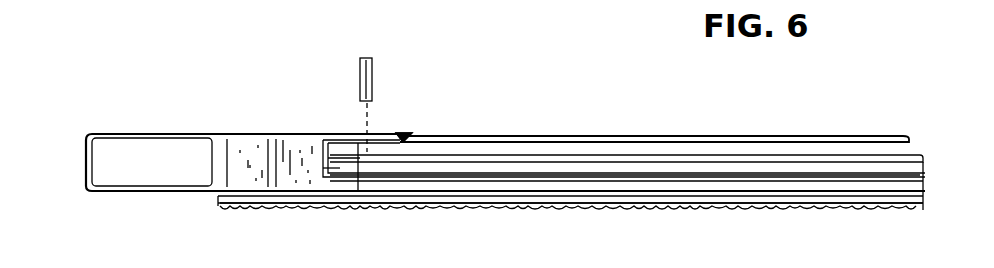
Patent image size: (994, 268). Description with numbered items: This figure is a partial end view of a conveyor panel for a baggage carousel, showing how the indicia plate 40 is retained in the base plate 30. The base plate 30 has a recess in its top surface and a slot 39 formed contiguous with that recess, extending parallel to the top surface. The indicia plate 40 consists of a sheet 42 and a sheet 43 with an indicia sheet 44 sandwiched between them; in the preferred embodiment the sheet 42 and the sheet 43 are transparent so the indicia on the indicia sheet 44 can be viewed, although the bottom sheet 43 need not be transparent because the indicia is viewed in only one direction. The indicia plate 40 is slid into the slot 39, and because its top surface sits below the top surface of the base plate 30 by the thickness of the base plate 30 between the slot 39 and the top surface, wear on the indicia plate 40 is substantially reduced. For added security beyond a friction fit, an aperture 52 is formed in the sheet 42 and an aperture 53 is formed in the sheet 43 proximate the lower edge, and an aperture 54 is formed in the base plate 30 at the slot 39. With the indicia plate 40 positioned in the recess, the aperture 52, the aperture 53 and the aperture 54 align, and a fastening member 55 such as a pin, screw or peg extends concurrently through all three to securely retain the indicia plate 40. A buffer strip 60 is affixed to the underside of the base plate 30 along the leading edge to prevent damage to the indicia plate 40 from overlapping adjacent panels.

The base plate 30 is at (242, 160).
The slot 39 is at (320, 155).
The indicia plate 40 is at (705, 143).
The sheet 42 is at (518, 150).
The sheet 43 is at (533, 163).
The indicia sheet 44 is at (568, 162).
The aperture 52 is at (407, 133).
The aperture 53 is at (348, 168).
The aperture 54 is at (403, 133).
The fastening member 55 is at (359, 76).
The buffer strip 60 is at (677, 200).